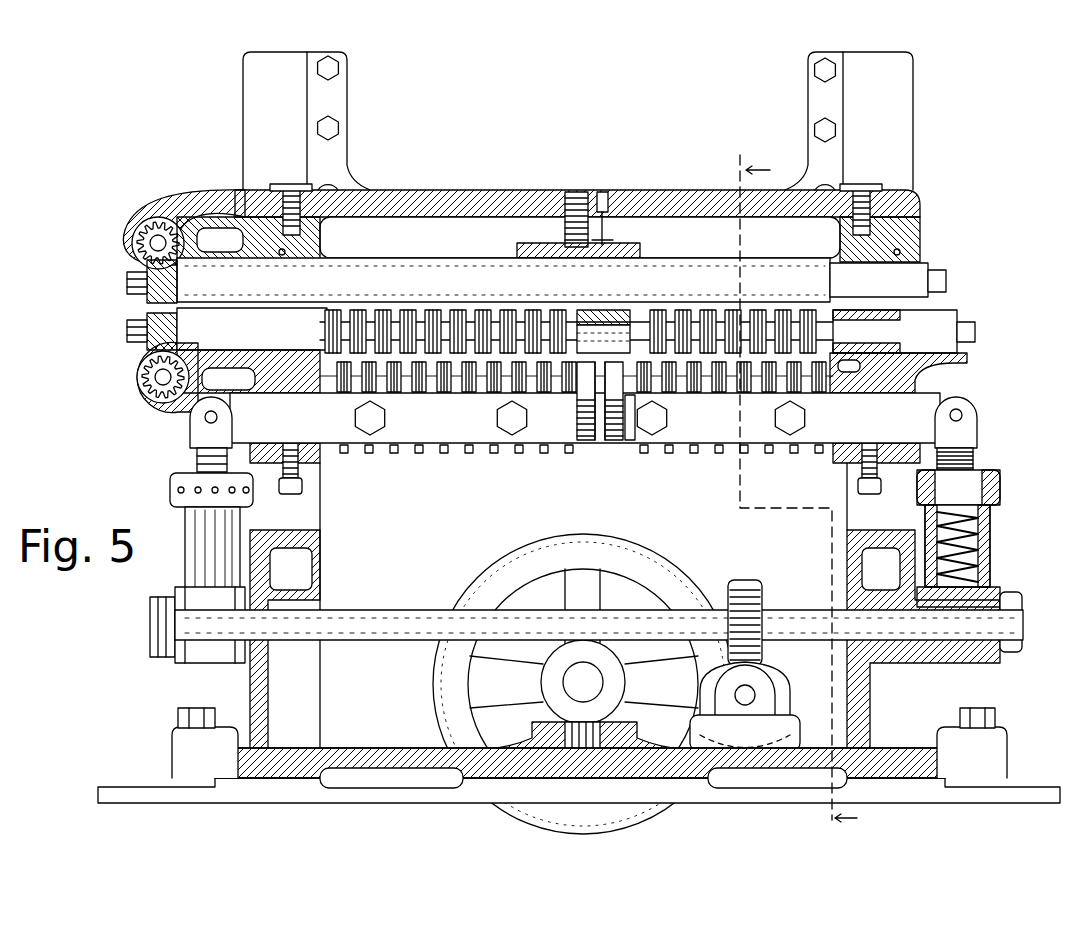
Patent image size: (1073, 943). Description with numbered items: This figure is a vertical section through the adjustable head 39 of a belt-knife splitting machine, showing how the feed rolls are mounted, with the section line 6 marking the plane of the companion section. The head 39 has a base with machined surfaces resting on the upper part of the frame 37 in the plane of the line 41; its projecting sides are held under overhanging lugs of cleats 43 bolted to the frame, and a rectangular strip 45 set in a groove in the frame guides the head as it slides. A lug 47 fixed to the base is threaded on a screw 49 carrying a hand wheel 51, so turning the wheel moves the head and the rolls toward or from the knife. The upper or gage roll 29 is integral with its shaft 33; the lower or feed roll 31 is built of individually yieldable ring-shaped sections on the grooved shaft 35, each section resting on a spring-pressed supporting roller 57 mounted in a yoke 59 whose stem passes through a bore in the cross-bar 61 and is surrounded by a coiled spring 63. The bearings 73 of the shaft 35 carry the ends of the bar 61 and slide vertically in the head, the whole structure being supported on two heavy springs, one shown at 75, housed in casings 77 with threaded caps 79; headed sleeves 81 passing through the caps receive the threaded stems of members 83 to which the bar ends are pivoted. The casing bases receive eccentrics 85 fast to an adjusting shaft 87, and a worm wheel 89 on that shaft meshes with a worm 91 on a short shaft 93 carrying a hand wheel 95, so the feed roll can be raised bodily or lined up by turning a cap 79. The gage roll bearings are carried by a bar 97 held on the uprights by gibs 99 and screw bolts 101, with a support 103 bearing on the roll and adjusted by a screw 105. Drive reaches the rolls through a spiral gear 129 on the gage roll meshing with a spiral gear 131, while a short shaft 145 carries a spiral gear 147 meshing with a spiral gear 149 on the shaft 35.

The section line 6 is at (798, 490).
The upper or gage roll 29 is at (696, 270).
The lower or feed roll 31 is at (768, 296).
The shaft of gage roll 33 is at (235, 273).
The shaft of feed roll 35 is at (285, 330).
The frame 37 is at (1000, 795).
The head 39 is at (262, 100).
The line of machined surfaces 41 is at (275, 778).
The cleats 43 is at (190, 745).
The strip 45 is at (560, 762).
The lug 47 is at (565, 660).
The screw 49 is at (592, 690).
The hand wheel 51 is at (515, 565).
The spring-pressed supporting rollers 57 is at (635, 405).
The yoke 59 is at (577, 410).
The cross-bar 61 is at (440, 423).
The coiled spring 63 is at (613, 425).
The bearings 73 is at (200, 398).
The spring 75 is at (985, 522).
The casing 77 is at (988, 542).
The cap 79 is at (175, 493).
The headed sleeve 81 is at (975, 458).
The member 83 is at (205, 425).
The eccentric 85 is at (1000, 592).
The adjusting shaft 87 is at (790, 618).
The worm wheel 89 is at (745, 583).
The worm 91 is at (778, 693).
The short shaft 93 is at (745, 705).
The hand wheel 95 is at (772, 688).
The bar 97 is at (673, 210).
The gibs 99 is at (333, 102).
The screw bolts 101 is at (333, 72).
The support 103 is at (606, 240).
The screw 105 is at (575, 195).
The spiral gear 129 is at (128, 243).
The spiral gear 131 is at (160, 198).
The short shaft 145 is at (148, 360).
The spiral gear 147 is at (122, 382).
The spiral gear 149 is at (147, 313).